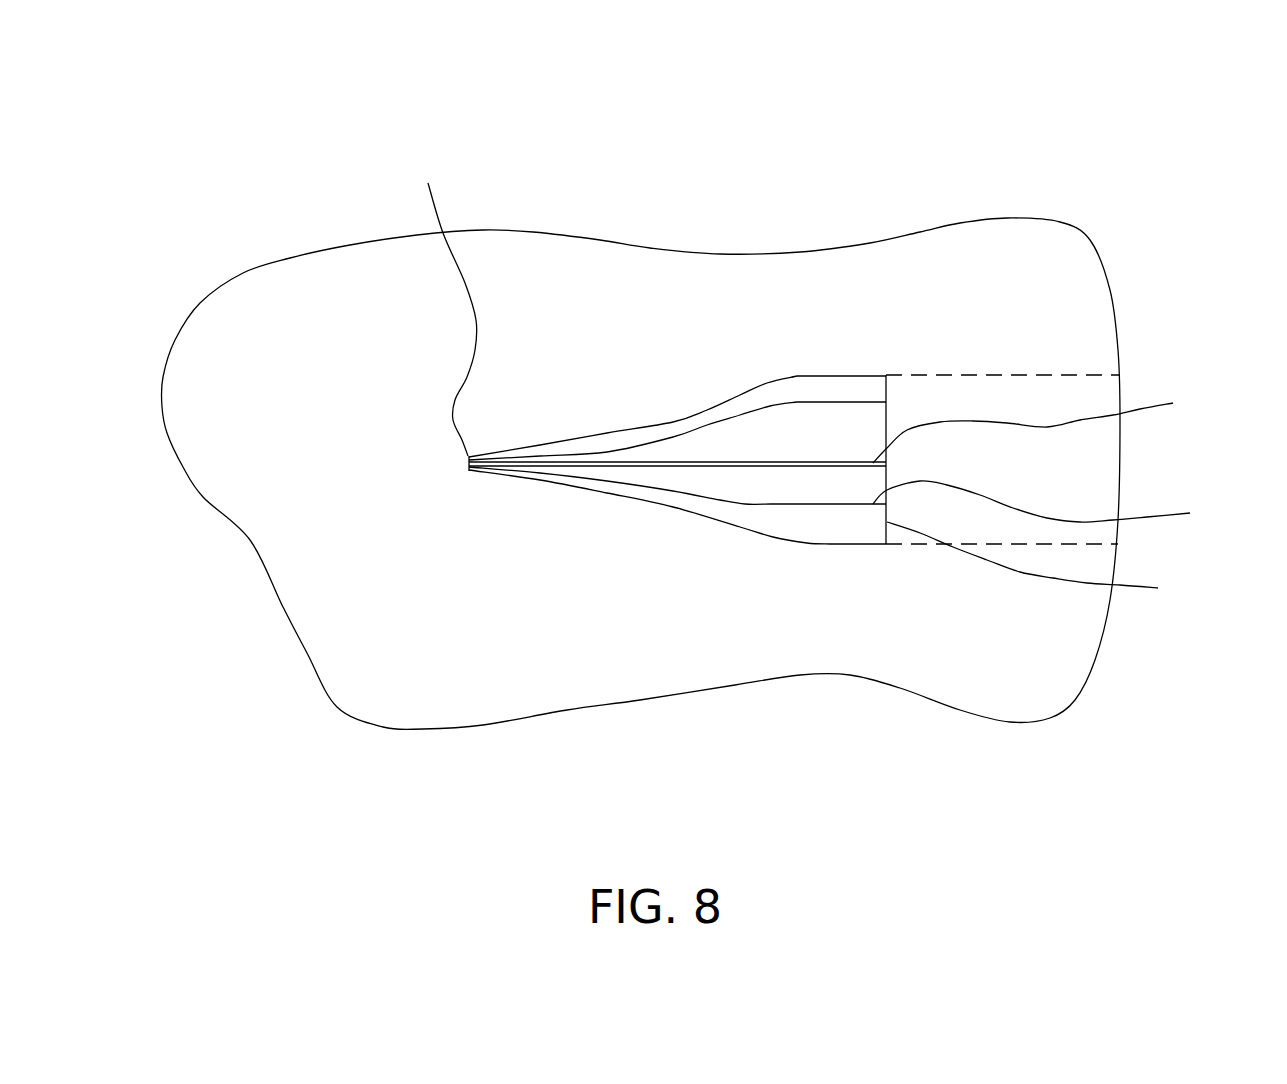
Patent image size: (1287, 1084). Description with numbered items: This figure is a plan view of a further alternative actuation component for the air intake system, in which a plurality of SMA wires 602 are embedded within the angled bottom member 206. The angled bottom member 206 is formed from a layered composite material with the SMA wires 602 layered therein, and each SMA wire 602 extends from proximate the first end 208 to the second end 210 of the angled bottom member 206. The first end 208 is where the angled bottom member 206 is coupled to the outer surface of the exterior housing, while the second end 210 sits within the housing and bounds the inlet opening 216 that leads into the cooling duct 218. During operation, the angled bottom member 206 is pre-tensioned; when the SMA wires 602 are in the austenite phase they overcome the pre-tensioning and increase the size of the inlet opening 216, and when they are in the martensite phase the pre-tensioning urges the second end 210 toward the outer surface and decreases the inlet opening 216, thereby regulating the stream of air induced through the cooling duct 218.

The first end 208 is at (436, 309).
The angled bottom member 206 is at (798, 376).
The SMA wires 602 is at (873, 402).
The cooling duct 218 is at (1021, 478).
The second end 210 is at (1049, 565).
The inlet opening 216 is at (846, 442).